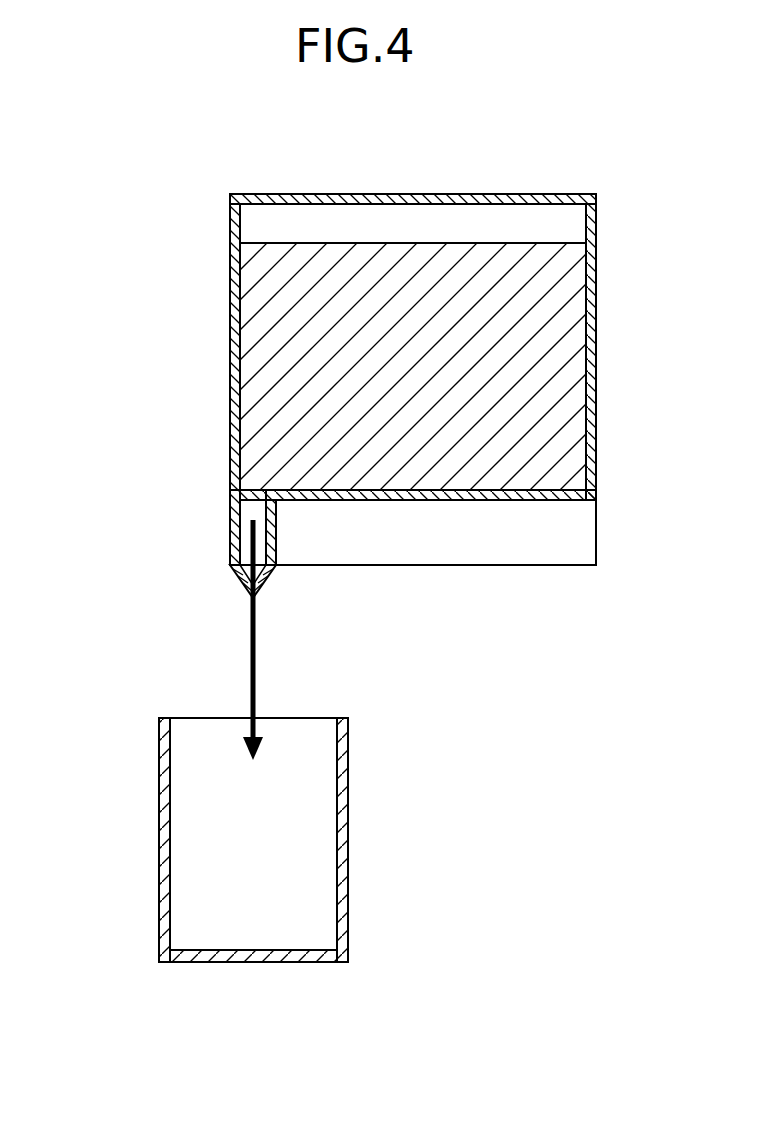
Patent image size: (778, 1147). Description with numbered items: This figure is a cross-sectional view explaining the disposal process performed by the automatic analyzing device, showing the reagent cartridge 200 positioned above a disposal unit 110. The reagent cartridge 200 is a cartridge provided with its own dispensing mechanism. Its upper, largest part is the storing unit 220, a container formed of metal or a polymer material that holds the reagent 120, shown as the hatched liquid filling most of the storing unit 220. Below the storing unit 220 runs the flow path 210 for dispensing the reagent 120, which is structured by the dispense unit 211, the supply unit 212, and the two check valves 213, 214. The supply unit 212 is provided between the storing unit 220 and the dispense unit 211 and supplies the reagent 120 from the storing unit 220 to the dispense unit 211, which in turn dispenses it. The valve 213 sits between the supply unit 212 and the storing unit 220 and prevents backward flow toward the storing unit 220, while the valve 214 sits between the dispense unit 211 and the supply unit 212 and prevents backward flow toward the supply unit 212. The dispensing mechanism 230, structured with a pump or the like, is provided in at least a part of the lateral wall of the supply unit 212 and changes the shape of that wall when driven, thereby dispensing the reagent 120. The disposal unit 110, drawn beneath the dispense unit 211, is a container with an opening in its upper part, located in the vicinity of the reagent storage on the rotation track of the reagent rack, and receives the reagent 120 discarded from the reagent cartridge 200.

The reagent cartridge 200 is at (226, 163).
The storing unit 220 is at (230, 300).
The reagent 120 is at (562, 440).
The dispensing mechanism 230 is at (598, 532).
The flow path 210 is at (118, 558).
The valve 213 is at (251, 492).
The supply unit 212 is at (230, 560).
The dispense unit 211 is at (248, 592).
The valve 214 is at (262, 580).
The disposal unit 110 is at (348, 836).